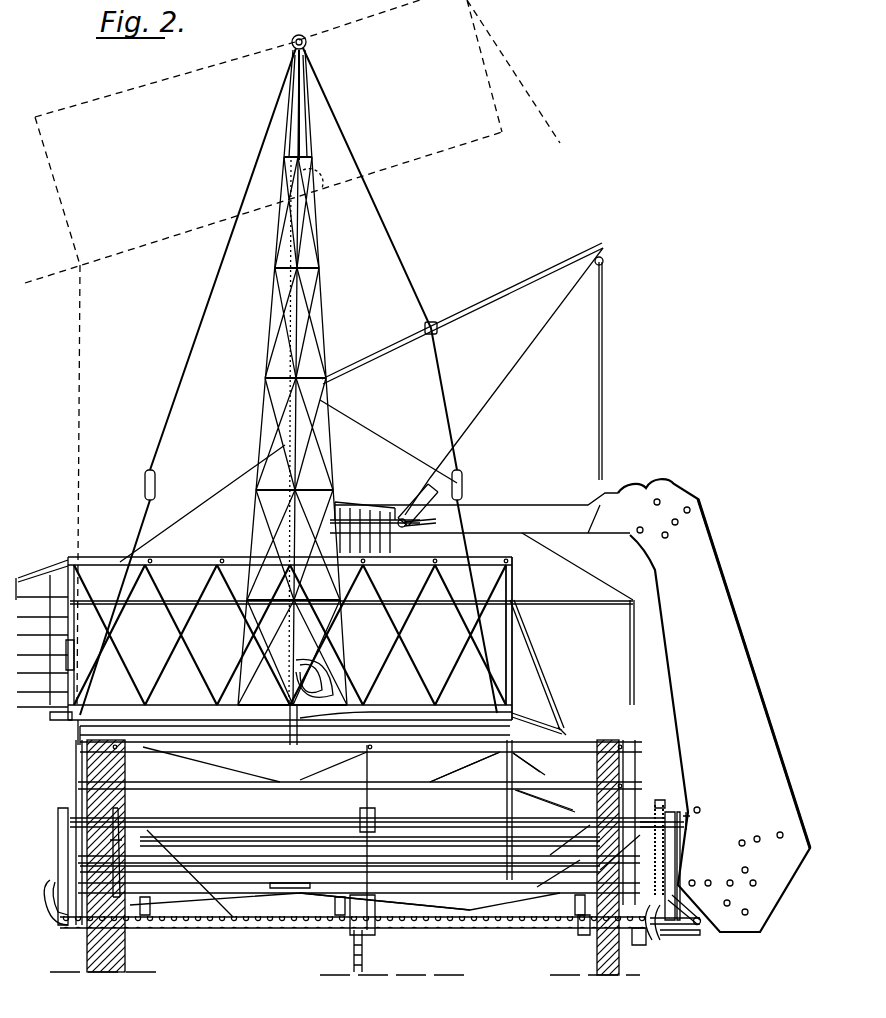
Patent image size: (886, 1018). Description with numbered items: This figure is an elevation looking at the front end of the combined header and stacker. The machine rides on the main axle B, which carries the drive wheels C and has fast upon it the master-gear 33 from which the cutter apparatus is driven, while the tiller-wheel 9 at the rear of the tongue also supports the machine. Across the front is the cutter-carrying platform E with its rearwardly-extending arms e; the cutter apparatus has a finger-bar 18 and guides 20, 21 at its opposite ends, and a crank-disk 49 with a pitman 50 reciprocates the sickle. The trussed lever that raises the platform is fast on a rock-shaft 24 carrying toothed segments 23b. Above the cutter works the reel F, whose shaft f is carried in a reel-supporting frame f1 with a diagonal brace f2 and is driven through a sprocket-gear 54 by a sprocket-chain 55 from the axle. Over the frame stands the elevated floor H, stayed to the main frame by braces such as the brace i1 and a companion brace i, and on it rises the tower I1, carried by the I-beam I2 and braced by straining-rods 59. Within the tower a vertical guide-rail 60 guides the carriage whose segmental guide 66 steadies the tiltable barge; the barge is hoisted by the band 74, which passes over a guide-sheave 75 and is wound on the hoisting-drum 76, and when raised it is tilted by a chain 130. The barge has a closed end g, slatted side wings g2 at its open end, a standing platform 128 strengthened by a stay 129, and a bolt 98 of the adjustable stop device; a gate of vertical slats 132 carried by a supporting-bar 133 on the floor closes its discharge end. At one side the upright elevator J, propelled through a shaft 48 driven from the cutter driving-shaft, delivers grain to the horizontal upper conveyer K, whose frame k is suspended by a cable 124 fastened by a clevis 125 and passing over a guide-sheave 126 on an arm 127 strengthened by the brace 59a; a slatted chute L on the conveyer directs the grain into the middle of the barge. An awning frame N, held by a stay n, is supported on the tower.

The chain 130 is at (82, 405).
The tower I1 is at (330, 330).
The guide-sheave 75 is at (294, 142).
The guide-rail 60 is at (284, 430).
The segmental guide 66 is at (318, 196).
The hoisting band 74 is at (358, 806).
The straining-rod 59 is at (189, 372).
The brace 59a is at (380, 206).
The stay n is at (168, 512).
The arm 127 is at (484, 297).
The guide-sheave 126 is at (605, 264).
The cable 124 is at (514, 375).
The clevis 125 is at (415, 500).
The chute L is at (360, 508).
The horizontal upper conveyer K is at (525, 514).
The conveyer-frame k is at (563, 535).
The elevator mechanism J is at (756, 683).
The frame N is at (186, 598).
The closed end of receiver g is at (513, 585).
The side wing g2 is at (35, 572).
The bolt 98 is at (70, 662).
The stay 129 is at (548, 677).
The standing platform 128 is at (545, 714).
The I-beam I2 is at (352, 717).
The vertical slat 132 is at (50, 716).
The floor H is at (100, 724).
The supporting-bar 133 is at (78, 745).
The reel F is at (152, 788).
The carrying-wheel C is at (104, 973).
The toothed segment 23b is at (150, 816).
The reel-shaft f is at (190, 815).
The rock-shaft 24 is at (226, 838).
The main axle B is at (420, 865).
The brace i is at (538, 770).
The brace i1 is at (440, 753).
The cutter-carrying platform E is at (290, 925).
The rearwardly-extending arm e is at (150, 905).
The tiller-wheel 9 is at (364, 960).
The finger-bar 18 is at (450, 925).
The hoisting-drum 76 is at (277, 889).
The reel-supporting frame f1 is at (57, 845).
The guide 20 is at (52, 890).
The sprocket-chain 55 is at (666, 842).
The crank-disk 49 is at (690, 908).
The shaft 48 is at (703, 922).
The pitman 50 is at (692, 936).
The guide 21 is at (658, 935).
The master-gear 33 is at (640, 946).
The diagonal brace f2 is at (588, 935).
The sprocket-gear 54 is at (663, 803).